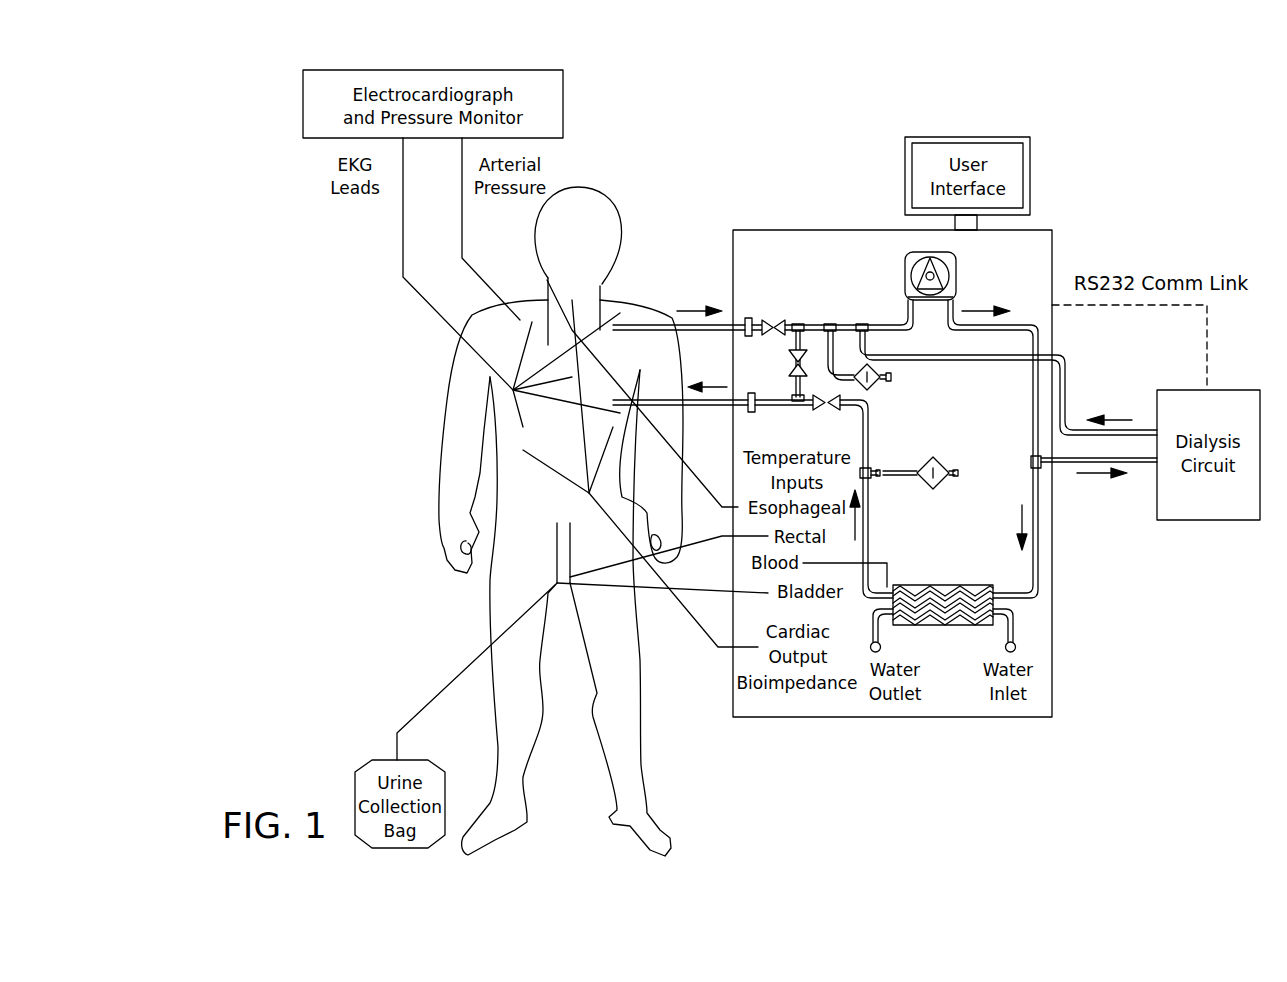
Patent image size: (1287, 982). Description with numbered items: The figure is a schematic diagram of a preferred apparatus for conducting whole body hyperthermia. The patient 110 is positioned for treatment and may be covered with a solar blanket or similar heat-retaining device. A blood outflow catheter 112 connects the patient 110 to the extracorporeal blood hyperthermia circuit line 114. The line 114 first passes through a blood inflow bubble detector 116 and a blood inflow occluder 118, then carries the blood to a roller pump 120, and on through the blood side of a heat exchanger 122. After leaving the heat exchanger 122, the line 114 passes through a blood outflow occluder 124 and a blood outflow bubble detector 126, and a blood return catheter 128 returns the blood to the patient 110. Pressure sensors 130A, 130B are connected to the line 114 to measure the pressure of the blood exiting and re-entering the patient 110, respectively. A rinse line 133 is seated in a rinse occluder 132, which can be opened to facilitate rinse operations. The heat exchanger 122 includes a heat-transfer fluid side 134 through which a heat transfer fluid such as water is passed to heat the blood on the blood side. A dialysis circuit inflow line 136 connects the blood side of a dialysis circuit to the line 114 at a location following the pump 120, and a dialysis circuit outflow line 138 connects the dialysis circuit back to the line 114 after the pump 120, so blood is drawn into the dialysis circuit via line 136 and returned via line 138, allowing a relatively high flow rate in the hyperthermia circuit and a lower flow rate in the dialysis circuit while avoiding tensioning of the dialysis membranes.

The patient 110 is at (607, 200).
The blood outflow catheter 112 is at (637, 323).
The extracorporeal blood hyperthermia circuit line 114 is at (715, 325).
The blood inflow bubble detector 116 is at (748, 318).
The blood inflow occluder 118 is at (780, 320).
The pump 120 is at (957, 265).
The heat exchanger 122 is at (945, 585).
The blood outflow occluder 124 is at (875, 400).
The blood outflow bubble detector 126 is at (752, 412).
The blood return catheter 128 is at (682, 405).
The pressure sensor 130A is at (883, 368).
The pressure sensor 130B is at (940, 485).
The rinse occluder 132 is at (790, 357).
The rinse line 133 is at (790, 385).
The heat-transfer fluid side 134 is at (952, 625).
The dialysis circuit inflow line 136 is at (1137, 463).
The dialysis circuit outflow line 138 is at (935, 357).